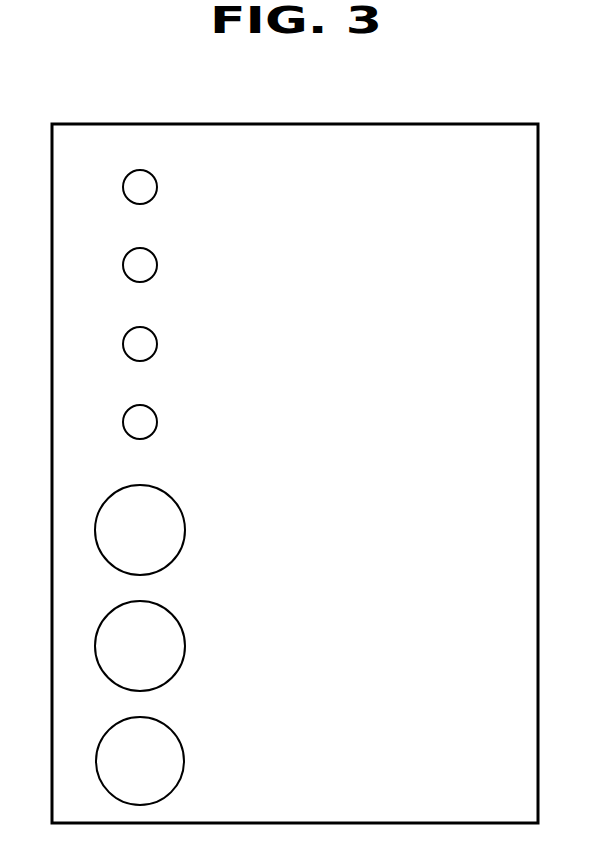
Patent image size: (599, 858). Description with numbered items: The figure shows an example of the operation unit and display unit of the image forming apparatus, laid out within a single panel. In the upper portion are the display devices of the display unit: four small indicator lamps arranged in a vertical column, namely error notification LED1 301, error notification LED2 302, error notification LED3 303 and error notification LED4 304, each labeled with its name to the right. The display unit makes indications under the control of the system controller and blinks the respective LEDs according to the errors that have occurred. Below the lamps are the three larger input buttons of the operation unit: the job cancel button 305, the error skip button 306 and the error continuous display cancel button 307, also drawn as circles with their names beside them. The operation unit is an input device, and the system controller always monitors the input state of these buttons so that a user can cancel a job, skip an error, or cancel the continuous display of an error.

The error notification LED1 301 is at (175, 158).
The error notification LED2 302 is at (175, 236).
The error notification LED3 303 is at (175, 315).
The error notification LED4 304 is at (175, 393).
The job cancel button 305 is at (193, 480).
The error skip button 306 is at (193, 596).
The error continuous display cancel button 307 is at (193, 712).